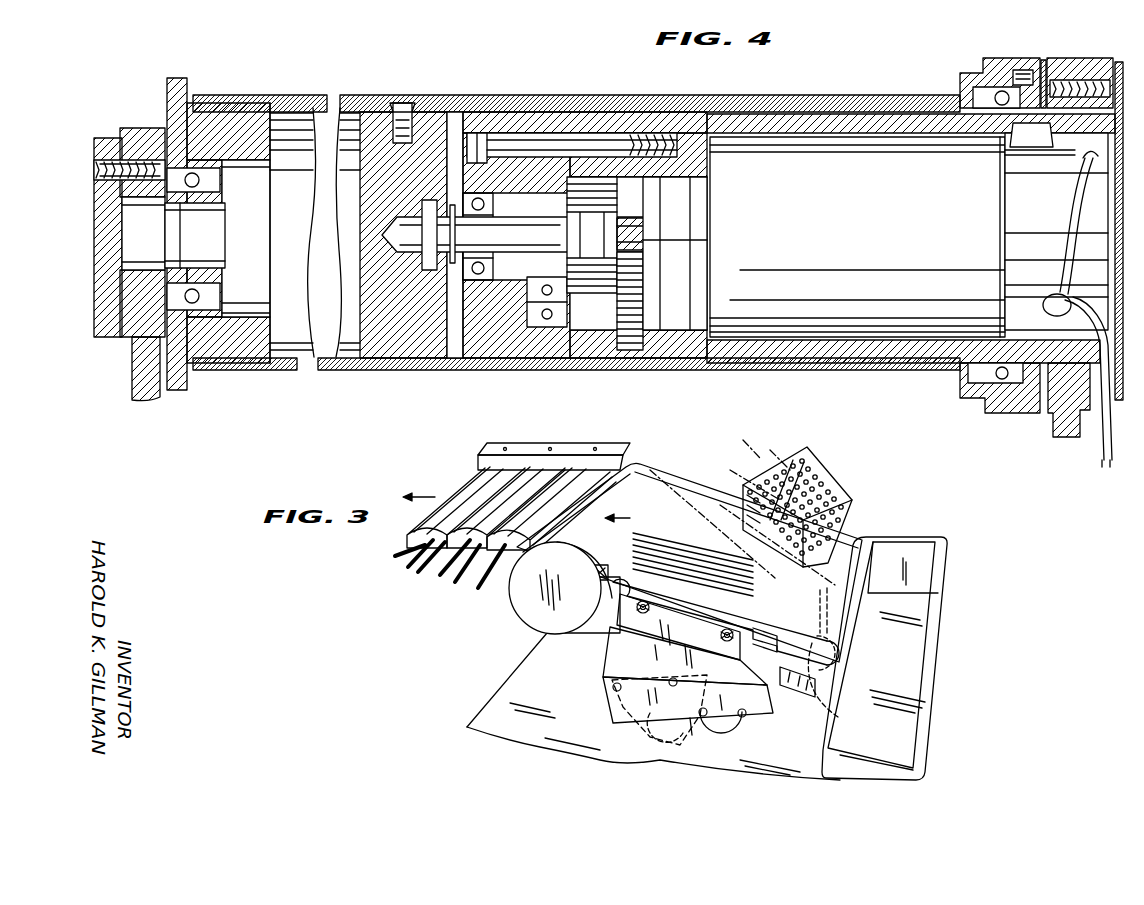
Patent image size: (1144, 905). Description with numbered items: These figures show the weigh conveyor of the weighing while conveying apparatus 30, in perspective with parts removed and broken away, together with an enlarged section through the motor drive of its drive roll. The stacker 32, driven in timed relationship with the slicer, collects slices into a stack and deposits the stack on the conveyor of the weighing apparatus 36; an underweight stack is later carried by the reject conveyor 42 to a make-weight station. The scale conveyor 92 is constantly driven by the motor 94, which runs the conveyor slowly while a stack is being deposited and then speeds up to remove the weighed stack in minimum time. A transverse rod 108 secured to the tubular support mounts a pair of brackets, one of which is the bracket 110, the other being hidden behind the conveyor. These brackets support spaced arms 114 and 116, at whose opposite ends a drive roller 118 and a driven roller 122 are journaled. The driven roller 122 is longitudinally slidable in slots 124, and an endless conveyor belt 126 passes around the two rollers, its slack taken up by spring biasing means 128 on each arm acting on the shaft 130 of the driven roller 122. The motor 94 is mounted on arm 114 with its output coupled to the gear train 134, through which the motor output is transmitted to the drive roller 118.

In FIG. 3, the weighing while conveying apparatus 30 is at (689, 544).
In FIG. 3, the stacker 32 is at (824, 455).
In FIG. 3, the weighing apparatus 36 is at (564, 604).
In FIG. 3, the reject conveyor 42 is at (463, 478).
In FIG. 4, the scale conveyor 92 is at (823, 96).
In FIG. 3, the scale conveyor 92 is at (884, 634).
In FIG. 4, the motor 94 is at (900, 158).
In FIG. 3, the transverse rod 108 is at (690, 730).
In FIG. 3, the bracket 110 is at (613, 667).
In FIG. 4, the arm 114 is at (1083, 56).
In FIG. 3, the arm 114 is at (778, 650).
In FIG. 4, the arm 116 is at (140, 128).
In FIG. 3, the arm 116 is at (640, 482).
In FIG. 4, the drive roller 118 is at (240, 372).
In FIG. 3, the drive roller 118 is at (607, 593).
In FIG. 3, the driven roller 122 is at (830, 666).
In FIG. 3, the slots 124 is at (788, 686).
In FIG. 3, the endless conveyor belt 126 is at (866, 568).
In FIG. 3, the spring biasing means 128 is at (823, 713).
In FIG. 3, the shaft 130 is at (837, 630).
In FIG. 4, the gear train 134 is at (642, 212).